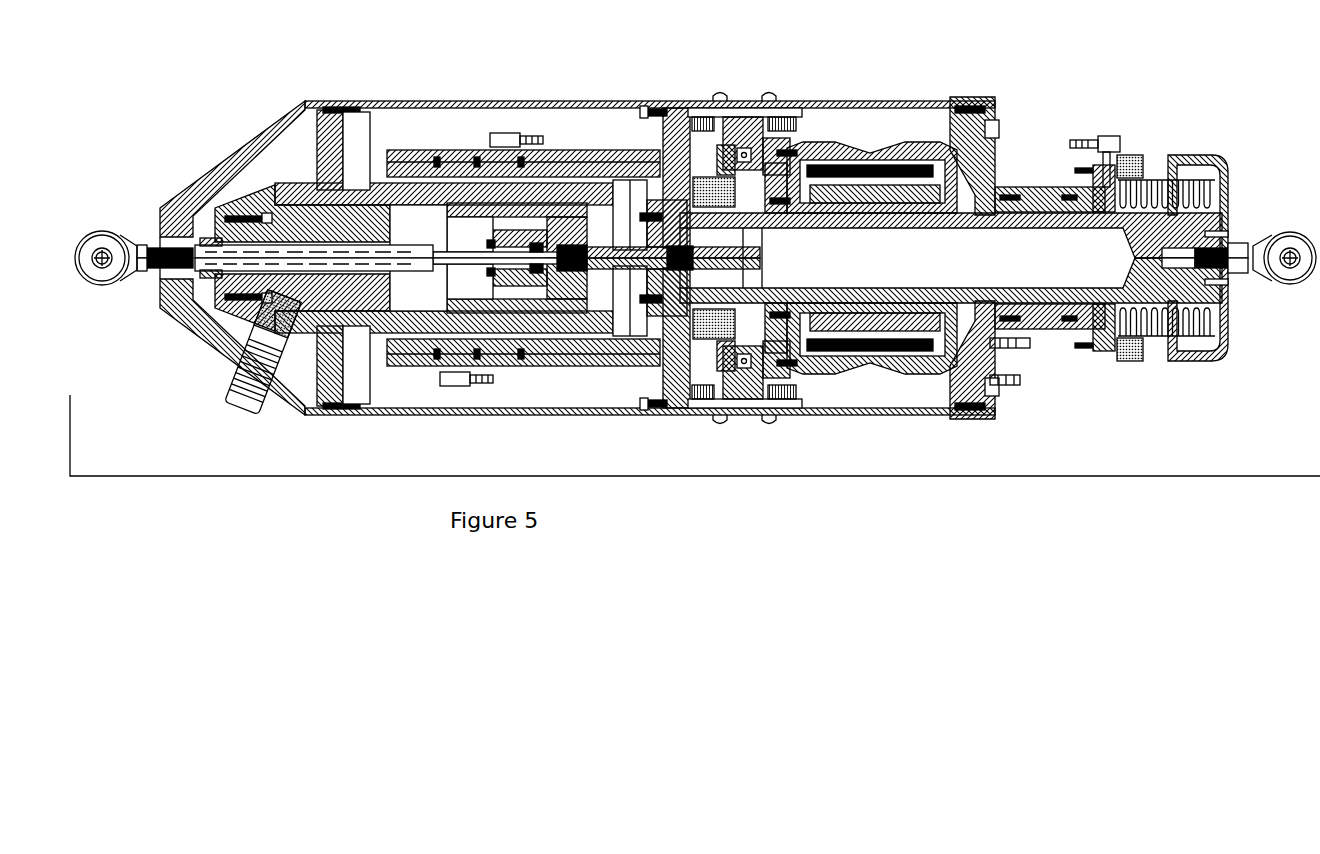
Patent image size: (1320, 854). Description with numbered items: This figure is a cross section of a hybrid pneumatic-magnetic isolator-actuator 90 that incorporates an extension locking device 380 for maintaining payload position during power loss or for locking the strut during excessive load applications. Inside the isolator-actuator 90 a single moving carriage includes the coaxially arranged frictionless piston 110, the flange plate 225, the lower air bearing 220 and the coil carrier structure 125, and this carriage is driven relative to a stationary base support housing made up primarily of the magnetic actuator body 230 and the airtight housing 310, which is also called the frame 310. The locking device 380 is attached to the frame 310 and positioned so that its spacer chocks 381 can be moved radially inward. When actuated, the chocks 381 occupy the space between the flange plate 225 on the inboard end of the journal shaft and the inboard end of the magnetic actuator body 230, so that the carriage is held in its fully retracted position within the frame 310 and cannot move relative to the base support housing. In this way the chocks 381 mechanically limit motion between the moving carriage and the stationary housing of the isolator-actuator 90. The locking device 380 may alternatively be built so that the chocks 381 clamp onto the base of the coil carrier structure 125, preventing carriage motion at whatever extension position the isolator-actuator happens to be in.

The hybrid pneumatic-magnetic isolator-actuator 90 is at (695, 461).
The frictionless piston 110 is at (414, 192).
The coil carrier structure 125 is at (623, 214).
The lower air bearing 220 is at (523, 208).
The flange plate 225 is at (607, 193).
The magnetic actuator body 230 is at (898, 211).
The airtight housing 310 is at (579, 219).
The extension locking device 380 is at (741, 236).
The spacer chocks 381 is at (793, 258).